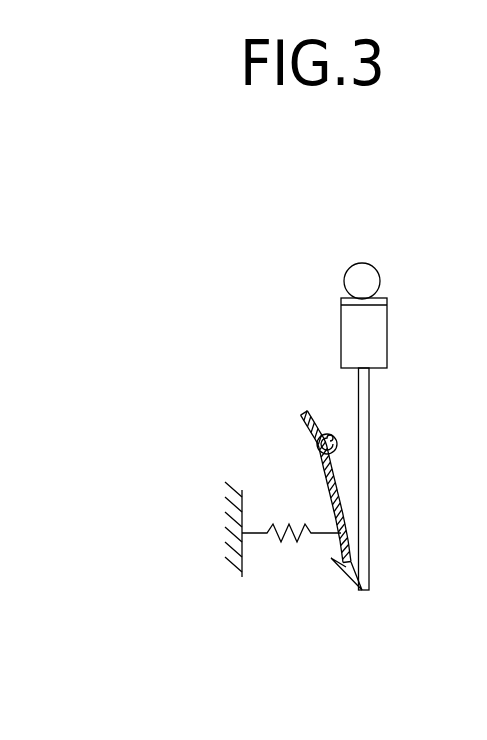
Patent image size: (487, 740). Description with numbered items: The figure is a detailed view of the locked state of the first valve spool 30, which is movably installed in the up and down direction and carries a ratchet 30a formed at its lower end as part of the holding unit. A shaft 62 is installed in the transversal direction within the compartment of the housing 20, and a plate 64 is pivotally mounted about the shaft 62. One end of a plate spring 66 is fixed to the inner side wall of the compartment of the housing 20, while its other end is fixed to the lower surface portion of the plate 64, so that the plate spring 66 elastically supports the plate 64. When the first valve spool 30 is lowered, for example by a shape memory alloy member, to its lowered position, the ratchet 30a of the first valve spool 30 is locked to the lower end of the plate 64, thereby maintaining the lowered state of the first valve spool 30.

The housing 20 is at (243, 551).
The first valve spool 30 is at (364, 406).
The ratchet 30a is at (362, 593).
The shaft 62 is at (312, 438).
The plate 64 is at (325, 478).
The plate spring 66 is at (292, 538).